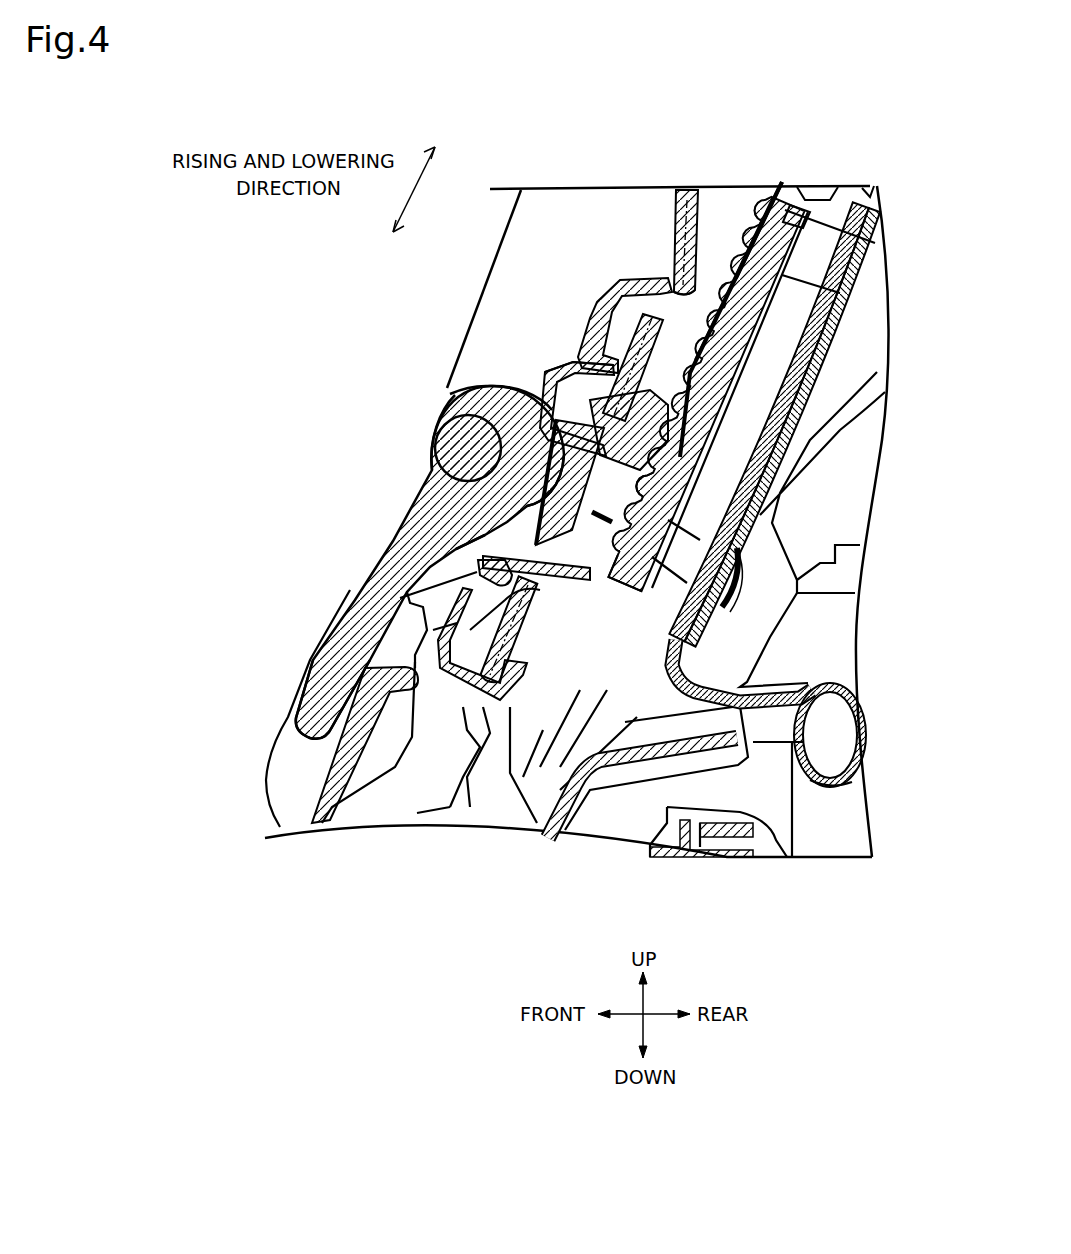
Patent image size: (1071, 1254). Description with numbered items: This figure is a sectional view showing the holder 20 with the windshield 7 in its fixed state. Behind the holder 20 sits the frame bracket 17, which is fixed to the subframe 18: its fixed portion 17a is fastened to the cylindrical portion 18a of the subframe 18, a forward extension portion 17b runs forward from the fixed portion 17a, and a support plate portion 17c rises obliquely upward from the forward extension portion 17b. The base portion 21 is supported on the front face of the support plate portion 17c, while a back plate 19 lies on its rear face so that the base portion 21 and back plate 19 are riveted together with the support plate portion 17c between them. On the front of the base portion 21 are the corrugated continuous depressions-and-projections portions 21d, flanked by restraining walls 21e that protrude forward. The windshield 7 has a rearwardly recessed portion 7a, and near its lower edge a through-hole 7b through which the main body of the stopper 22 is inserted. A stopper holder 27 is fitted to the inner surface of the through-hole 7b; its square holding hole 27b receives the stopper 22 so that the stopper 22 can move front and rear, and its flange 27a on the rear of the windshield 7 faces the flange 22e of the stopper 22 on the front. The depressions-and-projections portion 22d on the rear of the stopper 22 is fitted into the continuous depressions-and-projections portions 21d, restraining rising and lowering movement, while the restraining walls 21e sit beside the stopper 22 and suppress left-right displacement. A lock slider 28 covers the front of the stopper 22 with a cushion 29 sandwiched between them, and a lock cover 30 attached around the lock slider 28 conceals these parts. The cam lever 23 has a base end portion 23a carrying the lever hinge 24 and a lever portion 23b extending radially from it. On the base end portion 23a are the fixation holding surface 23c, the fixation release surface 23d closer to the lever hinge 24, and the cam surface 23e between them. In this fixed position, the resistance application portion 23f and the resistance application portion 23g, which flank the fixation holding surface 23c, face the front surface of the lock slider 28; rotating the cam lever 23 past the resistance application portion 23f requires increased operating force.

The windshield 7 is at (672, 232).
The recessed portion 7a is at (670, 283).
The through-hole 7b is at (550, 582).
The frame bracket 17 is at (777, 720).
The fixed portion 17a is at (823, 683).
The forward extension portion 17b is at (723, 690).
The support plate portion 17c is at (823, 330).
The subframe 18 is at (823, 788).
The cylindrical portion 18a is at (842, 787).
The back plate 19 is at (860, 277).
The holder 20 is at (356, 440).
The base portion 21 is at (833, 230).
The continuous depressions-and-projections portions 21d is at (753, 327).
The restraining walls 21e is at (773, 263).
The stopper 22 is at (505, 525).
The depressions-and-projections portion 22d is at (663, 495).
The flange 22e is at (517, 565).
The cam lever 23 is at (360, 587).
The base end portion 23a is at (472, 392).
The lever portion 23b is at (372, 625).
The fixation holding surface 23c is at (532, 505).
The fixation release surface 23d is at (430, 425).
The cam surface 23e is at (498, 390).
The resistance application portion 23f is at (540, 395).
The resistance application portion 23g is at (490, 540).
The lever hinge 24 is at (455, 447).
The stopper holder 27 is at (665, 440).
The flange 27a is at (660, 410).
The holding hole 27b is at (627, 450).
The lock slider 28 is at (560, 363).
The cushion 29 is at (570, 523).
The lock cover 30 is at (597, 330).